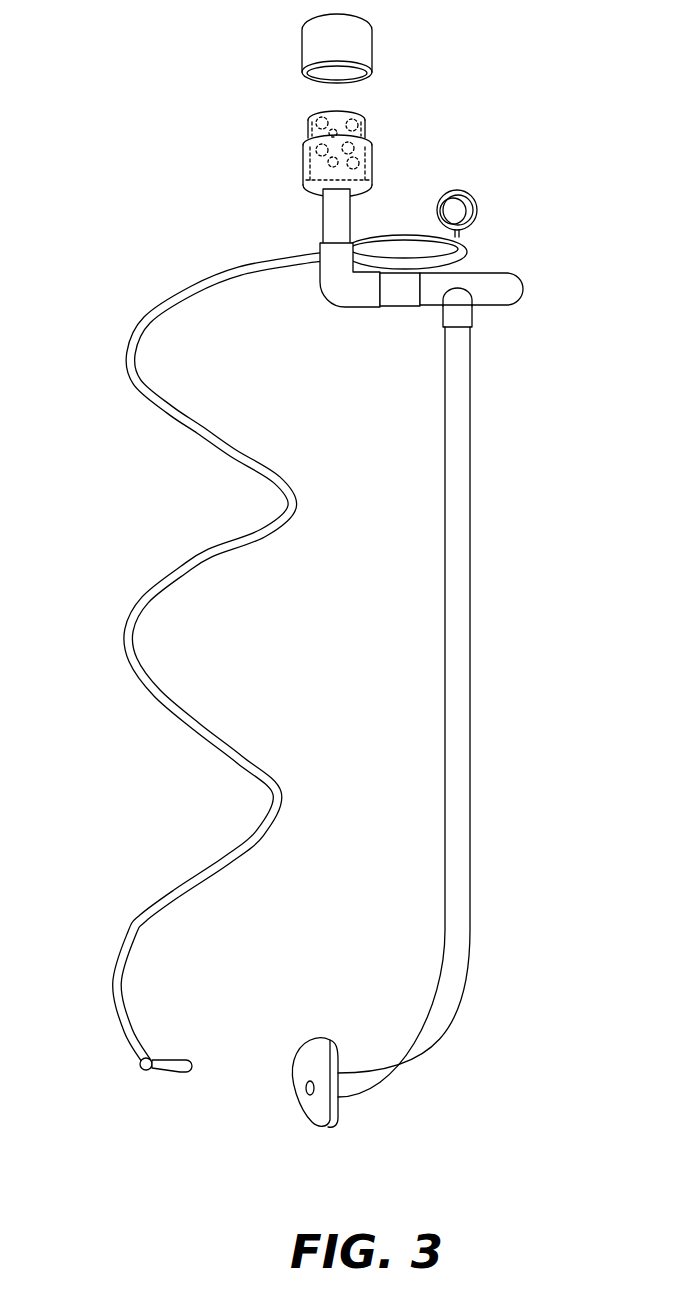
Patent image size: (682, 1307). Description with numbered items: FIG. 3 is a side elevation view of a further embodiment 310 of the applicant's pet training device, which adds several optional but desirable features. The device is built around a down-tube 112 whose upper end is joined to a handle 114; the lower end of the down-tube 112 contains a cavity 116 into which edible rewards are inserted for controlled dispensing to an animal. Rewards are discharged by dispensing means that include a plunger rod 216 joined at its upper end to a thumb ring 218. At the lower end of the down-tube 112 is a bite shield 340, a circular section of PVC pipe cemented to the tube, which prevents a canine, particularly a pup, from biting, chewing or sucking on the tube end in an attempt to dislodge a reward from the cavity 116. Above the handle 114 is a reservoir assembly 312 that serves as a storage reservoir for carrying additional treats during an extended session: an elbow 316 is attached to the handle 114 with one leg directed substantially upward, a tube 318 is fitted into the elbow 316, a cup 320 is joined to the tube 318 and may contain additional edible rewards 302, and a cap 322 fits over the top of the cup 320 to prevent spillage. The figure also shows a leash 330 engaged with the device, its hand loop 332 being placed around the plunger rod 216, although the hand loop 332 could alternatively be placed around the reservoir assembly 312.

The down-tube 112 is at (472, 567).
The handle 114 is at (398, 294).
The cavity 116 is at (306, 1090).
The plunger rod 216 is at (460, 276).
The thumb ring 218 is at (460, 192).
The edible rewards 302 is at (310, 118).
The further embodiment of the pet training device 310 is at (512, 687).
The reservoir assembly 312 is at (382, 99).
The elbow 316 is at (337, 290).
The tube 318 is at (330, 215).
The cup 320 is at (362, 157).
The cap 322 is at (302, 44).
The leash 330 is at (127, 632).
The hand loop 332 is at (465, 241).
The bite shield 340 is at (338, 1114).